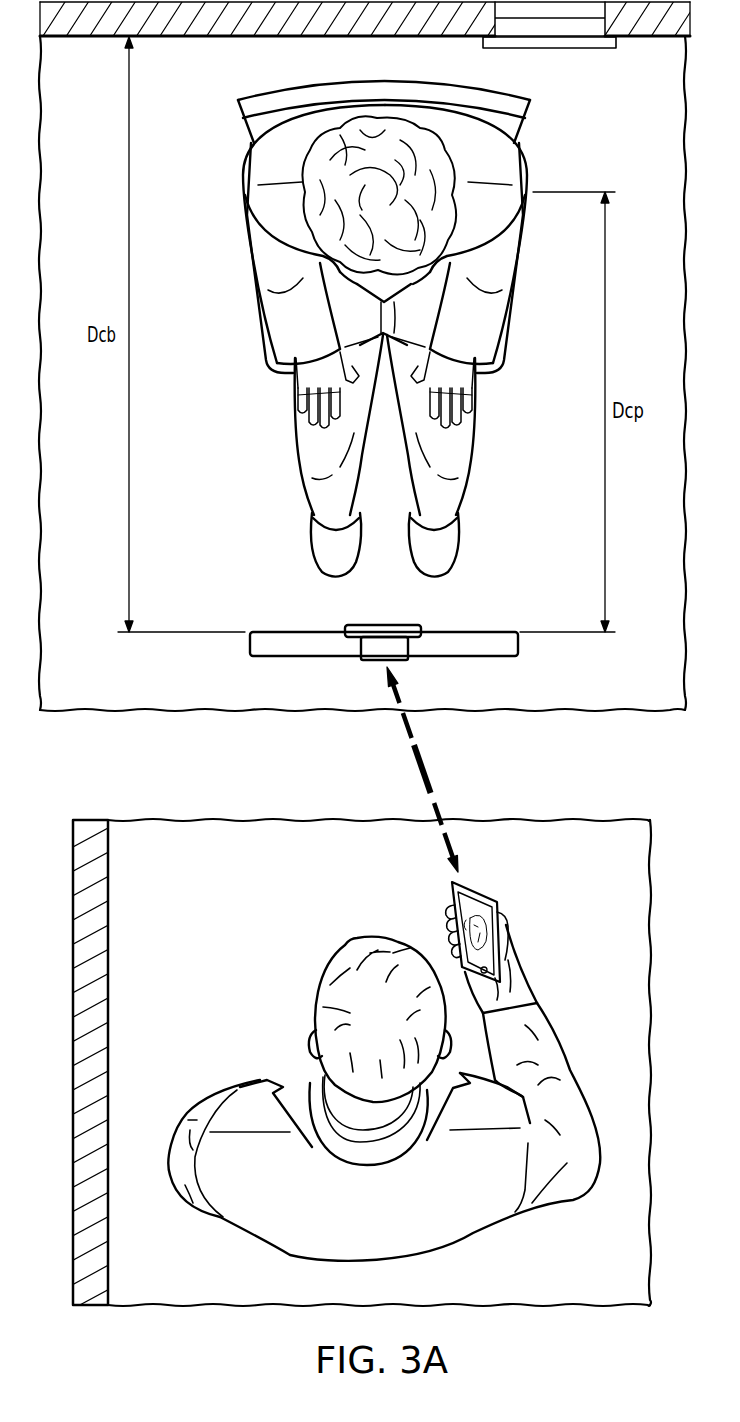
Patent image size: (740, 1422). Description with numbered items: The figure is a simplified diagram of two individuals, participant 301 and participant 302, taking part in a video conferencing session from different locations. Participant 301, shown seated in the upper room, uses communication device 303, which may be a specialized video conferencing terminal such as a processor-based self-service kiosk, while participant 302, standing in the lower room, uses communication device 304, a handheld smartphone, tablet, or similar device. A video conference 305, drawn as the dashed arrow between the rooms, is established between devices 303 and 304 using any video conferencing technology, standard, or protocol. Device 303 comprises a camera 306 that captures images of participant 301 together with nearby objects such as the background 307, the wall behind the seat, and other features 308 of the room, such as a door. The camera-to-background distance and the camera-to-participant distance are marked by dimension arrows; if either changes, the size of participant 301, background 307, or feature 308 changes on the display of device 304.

The participant 301 is at (513, 253).
The participant 302 is at (262, 1082).
The communication device 303 is at (470, 632).
The communication device 304 is at (500, 912).
The video conference 305 is at (417, 765).
The camera 306 is at (375, 625).
The background 307 is at (195, 38).
The features 308 is at (548, 50).